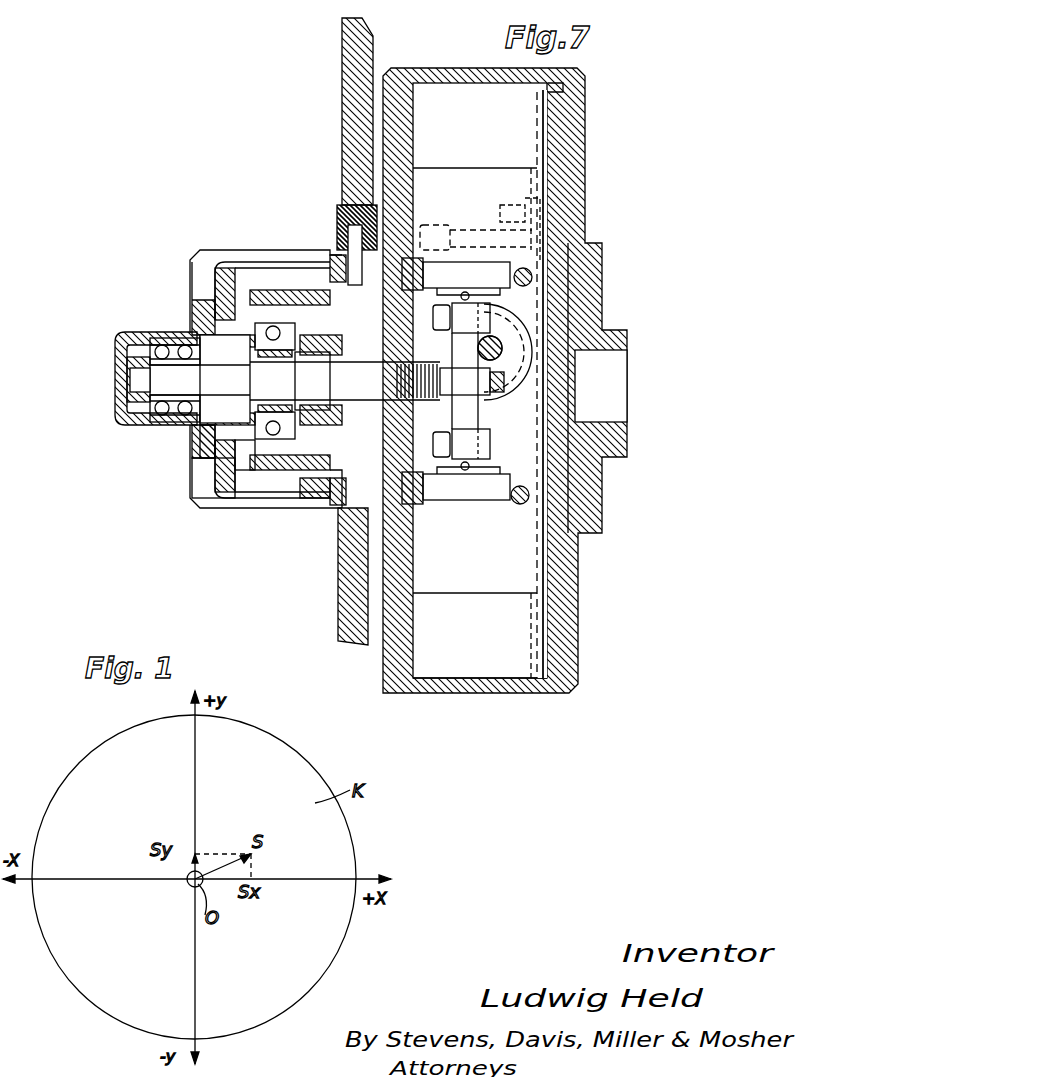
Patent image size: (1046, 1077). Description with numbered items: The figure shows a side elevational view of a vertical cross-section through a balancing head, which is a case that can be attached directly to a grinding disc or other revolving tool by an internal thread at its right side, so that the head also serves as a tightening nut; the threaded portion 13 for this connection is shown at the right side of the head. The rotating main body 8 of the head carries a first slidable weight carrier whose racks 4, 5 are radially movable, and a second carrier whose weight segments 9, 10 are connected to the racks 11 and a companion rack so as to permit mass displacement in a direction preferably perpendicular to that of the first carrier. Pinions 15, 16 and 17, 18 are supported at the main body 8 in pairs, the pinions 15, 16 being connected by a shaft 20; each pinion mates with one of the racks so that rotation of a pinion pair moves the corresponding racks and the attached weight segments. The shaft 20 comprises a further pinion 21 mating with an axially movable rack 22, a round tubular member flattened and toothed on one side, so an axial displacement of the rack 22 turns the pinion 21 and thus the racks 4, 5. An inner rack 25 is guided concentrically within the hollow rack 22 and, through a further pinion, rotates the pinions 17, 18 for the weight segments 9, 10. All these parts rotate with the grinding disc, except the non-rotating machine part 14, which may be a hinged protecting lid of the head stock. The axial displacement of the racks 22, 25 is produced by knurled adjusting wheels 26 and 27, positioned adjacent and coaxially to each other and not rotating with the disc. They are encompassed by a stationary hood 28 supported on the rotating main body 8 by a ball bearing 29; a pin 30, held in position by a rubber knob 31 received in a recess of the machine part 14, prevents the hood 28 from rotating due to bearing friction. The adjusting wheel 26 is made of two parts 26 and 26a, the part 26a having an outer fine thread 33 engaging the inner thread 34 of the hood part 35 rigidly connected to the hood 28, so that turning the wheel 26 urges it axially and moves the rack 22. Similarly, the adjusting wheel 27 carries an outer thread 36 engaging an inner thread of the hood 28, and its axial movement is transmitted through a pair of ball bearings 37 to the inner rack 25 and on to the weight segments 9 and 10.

The rack 4 is at (348, 245).
The rack 5 is at (410, 500).
The main body 8 is at (385, 660).
The weight segment 9 is at (515, 188).
The weight segment 10 is at (488, 645).
The rack 11 is at (535, 565).
The spigot 13 is at (612, 343).
The non-rotating machine part 14 is at (355, 80).
The pinion 15 is at (493, 500).
The pinion 16 is at (545, 265).
The pinion 17 is at (522, 360).
The pinion 18 is at (490, 348).
The shaft 20 is at (465, 420).
The pinion 21 is at (530, 330).
The axially movable rack 22 is at (275, 475).
The rack 25 is at (167, 400).
The adjusting wheel 26 is at (210, 490).
The adjusting wheel part 26a is at (215, 430).
The adjusting wheel 27 is at (120, 410).
The hood 28 is at (208, 255).
The ball bearing 29 is at (330, 485).
The pin 30 is at (343, 195).
The rubber knob 31 is at (350, 225).
The outer fine thread 33 is at (240, 480).
The inner thread 34 is at (300, 470).
The hood part 35 is at (340, 500).
The outer thread 36 is at (192, 305).
The ball bearings 37 is at (178, 345).